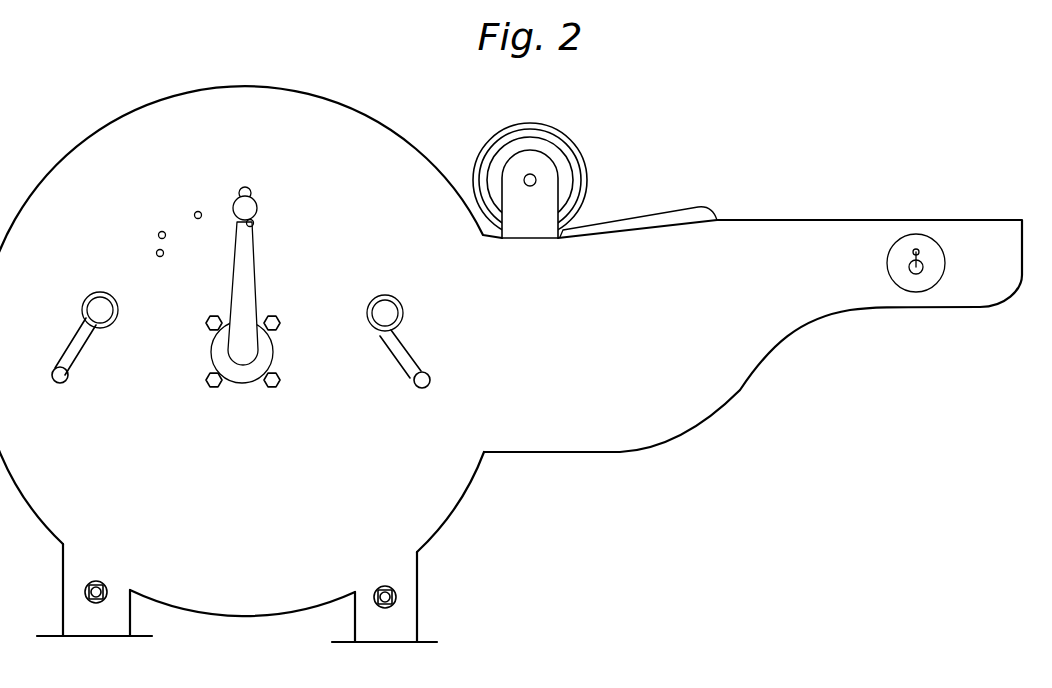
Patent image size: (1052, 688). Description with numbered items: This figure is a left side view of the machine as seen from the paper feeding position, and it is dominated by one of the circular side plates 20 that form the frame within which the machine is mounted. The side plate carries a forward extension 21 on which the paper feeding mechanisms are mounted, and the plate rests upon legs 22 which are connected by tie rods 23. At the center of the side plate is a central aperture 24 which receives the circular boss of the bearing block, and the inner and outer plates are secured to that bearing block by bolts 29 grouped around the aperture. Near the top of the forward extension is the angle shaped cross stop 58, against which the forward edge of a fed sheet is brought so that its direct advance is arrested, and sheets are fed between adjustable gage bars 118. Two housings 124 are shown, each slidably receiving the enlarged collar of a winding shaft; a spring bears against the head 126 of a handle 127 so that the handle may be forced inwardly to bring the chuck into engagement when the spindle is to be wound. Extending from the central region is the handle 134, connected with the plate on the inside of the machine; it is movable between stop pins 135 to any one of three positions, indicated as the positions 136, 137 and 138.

The side plates 20 is at (251, 351).
The forward extensions 21 is at (753, 336).
The legs 22 is at (108, 619).
The tie rods 23 is at (84, 590).
The central aperture 24 is at (274, 357).
The bolts 29 is at (280, 320).
The angle shaped cross stop 58 is at (575, 160).
The adjustable gage bars 118 is at (655, 215).
The housing 124 is at (255, 300).
The head 126 is at (118, 318).
The handle 127 is at (82, 357).
The handle 134 is at (232, 296).
The stop pins 135 is at (254, 226).
The first position 136 is at (258, 203).
The second position 137 is at (200, 211).
The third position 138 is at (160, 231).